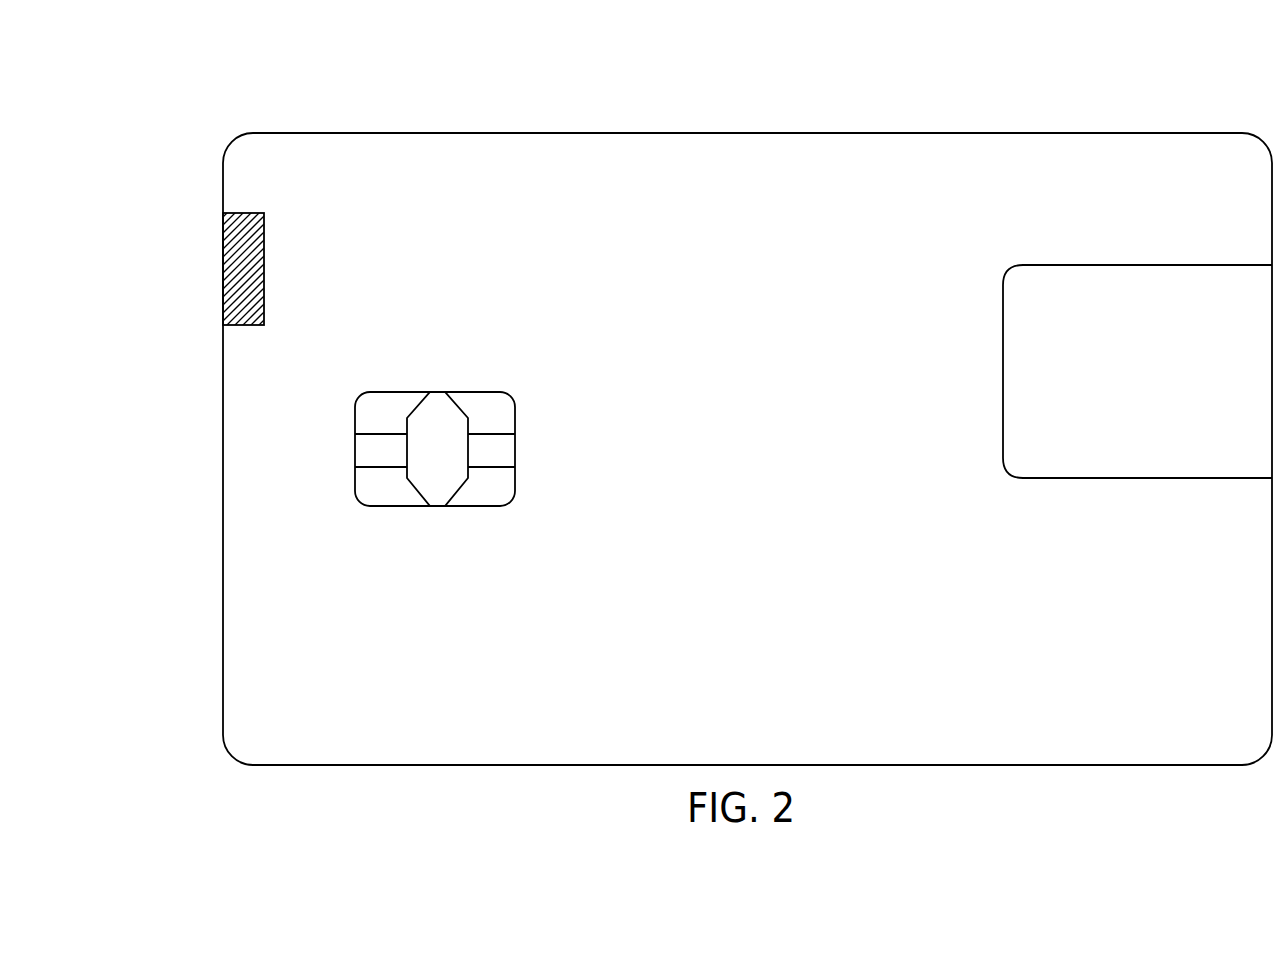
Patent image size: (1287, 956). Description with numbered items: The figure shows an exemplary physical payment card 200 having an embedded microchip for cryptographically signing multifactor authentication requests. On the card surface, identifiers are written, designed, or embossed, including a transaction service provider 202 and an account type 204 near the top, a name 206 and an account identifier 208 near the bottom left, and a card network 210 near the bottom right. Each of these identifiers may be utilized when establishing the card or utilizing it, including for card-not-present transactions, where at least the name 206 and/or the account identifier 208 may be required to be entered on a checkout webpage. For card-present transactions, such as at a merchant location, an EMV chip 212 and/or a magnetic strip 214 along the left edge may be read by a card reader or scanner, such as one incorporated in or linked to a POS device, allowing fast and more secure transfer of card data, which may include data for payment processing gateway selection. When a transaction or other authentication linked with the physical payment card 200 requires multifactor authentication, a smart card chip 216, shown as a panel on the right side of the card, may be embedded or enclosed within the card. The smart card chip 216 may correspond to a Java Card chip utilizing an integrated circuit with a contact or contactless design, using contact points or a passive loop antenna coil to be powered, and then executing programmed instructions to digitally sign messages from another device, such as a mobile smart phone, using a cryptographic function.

The physical payment card 200 is at (1176, 68).
The transaction service provider 202 is at (773, 178).
The account type 204 is at (746, 230).
The name 206 is at (468, 690).
The account identifier 208 is at (650, 742).
The card network 210 is at (1211, 686).
The EMV chip 212 is at (469, 382).
The magnetic strip 214 is at (216, 292).
The smart card chip 216 is at (1100, 256).